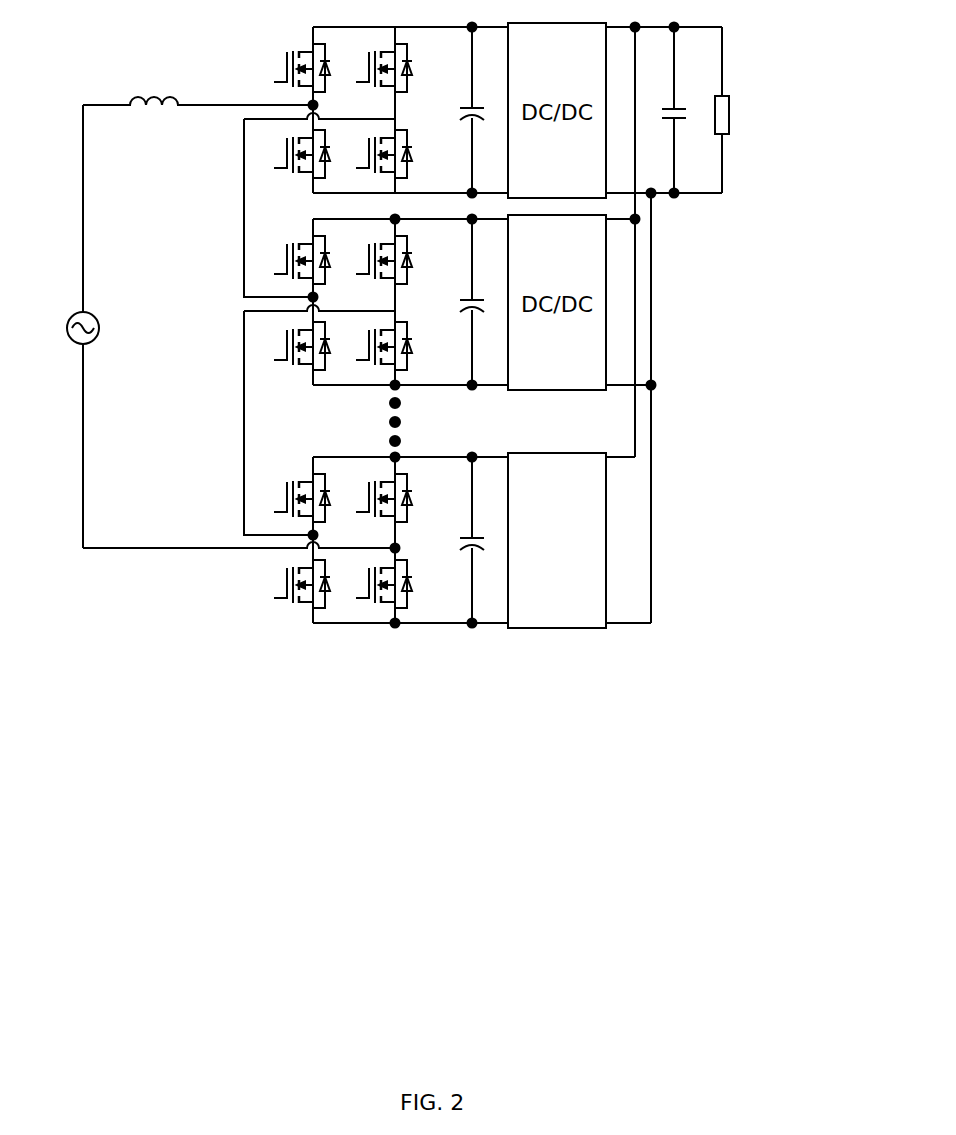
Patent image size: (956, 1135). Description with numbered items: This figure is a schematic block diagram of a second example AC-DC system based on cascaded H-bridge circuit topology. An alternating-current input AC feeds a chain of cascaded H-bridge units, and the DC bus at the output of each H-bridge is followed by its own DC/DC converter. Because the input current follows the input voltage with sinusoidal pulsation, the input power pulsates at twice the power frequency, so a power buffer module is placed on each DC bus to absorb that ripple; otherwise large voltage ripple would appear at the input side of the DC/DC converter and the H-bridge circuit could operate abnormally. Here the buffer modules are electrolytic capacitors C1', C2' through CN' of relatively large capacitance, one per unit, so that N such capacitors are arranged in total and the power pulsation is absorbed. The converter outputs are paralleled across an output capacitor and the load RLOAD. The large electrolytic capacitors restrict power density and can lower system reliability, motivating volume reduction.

The AC input AC is at (102, 326).
The electrolytic capacitor C1' is at (453, 110).
The electrolytic capacitor C2' is at (453, 302).
The electrolytic capacitor CN' is at (450, 540).
The number of units N is at (440, 541).
The load resistor RLOAD is at (755, 110).